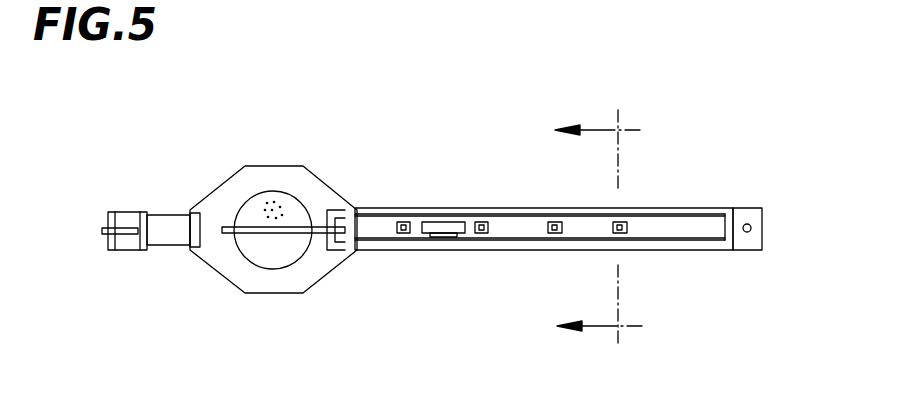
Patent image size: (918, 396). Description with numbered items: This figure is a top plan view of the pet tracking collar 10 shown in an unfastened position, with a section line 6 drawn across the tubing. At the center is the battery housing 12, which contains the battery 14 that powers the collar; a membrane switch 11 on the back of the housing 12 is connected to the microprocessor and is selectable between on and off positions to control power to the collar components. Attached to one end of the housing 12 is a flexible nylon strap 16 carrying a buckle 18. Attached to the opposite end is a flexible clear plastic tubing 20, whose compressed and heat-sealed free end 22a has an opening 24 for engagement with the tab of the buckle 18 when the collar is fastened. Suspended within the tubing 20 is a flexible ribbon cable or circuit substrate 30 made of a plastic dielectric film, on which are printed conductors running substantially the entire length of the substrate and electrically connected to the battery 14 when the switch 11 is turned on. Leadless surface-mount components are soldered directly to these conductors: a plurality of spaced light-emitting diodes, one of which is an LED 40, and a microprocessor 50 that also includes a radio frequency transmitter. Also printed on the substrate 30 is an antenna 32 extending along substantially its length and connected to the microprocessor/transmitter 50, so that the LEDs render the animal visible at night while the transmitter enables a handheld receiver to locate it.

The pet tracking collar 10 is at (248, 117).
The membrane switch 11 is at (283, 206).
The battery housing 12 is at (277, 165).
The battery 14 is at (280, 253).
The flexible nylon strap 16 is at (167, 243).
The buckle 18 is at (130, 210).
The flexible clear plastic tubing 20 is at (522, 208).
The free end 22a is at (748, 208).
The opening 24 is at (750, 246).
The circuit substrate 30 is at (587, 238).
The antenna 32 is at (672, 242).
The LED 40 is at (402, 222).
The microprocessor 50 is at (448, 239).
The section line 6- 6 is at (600, 231).